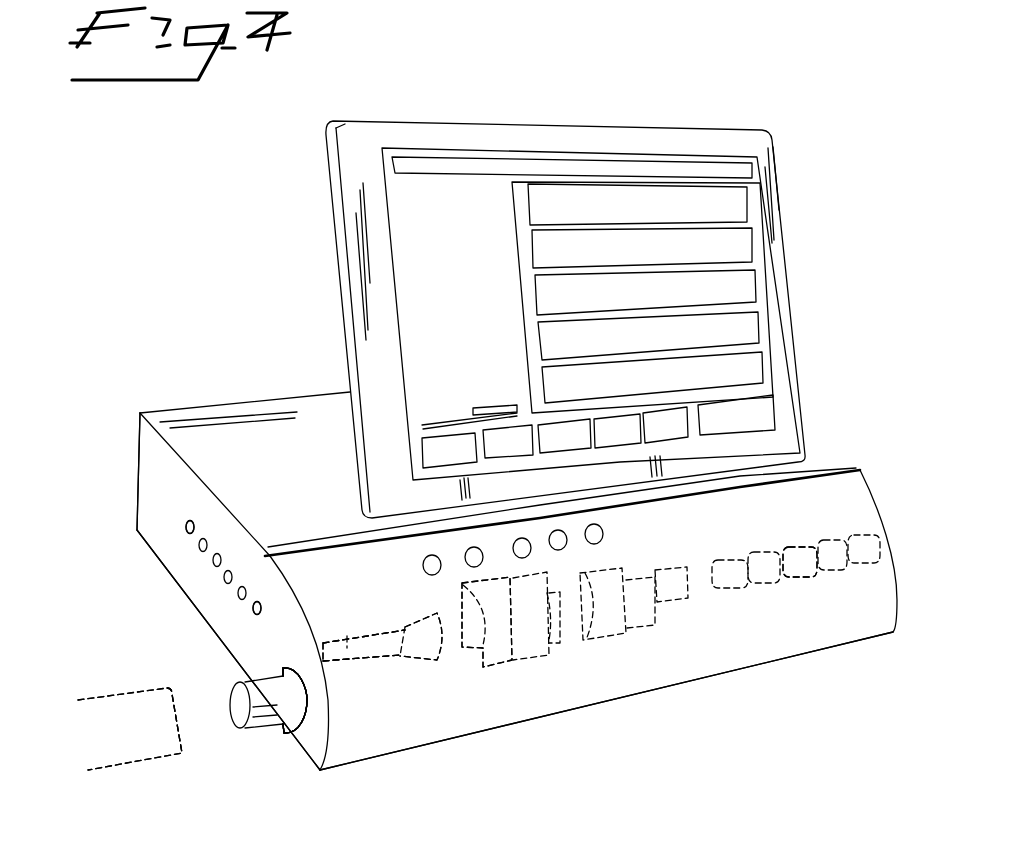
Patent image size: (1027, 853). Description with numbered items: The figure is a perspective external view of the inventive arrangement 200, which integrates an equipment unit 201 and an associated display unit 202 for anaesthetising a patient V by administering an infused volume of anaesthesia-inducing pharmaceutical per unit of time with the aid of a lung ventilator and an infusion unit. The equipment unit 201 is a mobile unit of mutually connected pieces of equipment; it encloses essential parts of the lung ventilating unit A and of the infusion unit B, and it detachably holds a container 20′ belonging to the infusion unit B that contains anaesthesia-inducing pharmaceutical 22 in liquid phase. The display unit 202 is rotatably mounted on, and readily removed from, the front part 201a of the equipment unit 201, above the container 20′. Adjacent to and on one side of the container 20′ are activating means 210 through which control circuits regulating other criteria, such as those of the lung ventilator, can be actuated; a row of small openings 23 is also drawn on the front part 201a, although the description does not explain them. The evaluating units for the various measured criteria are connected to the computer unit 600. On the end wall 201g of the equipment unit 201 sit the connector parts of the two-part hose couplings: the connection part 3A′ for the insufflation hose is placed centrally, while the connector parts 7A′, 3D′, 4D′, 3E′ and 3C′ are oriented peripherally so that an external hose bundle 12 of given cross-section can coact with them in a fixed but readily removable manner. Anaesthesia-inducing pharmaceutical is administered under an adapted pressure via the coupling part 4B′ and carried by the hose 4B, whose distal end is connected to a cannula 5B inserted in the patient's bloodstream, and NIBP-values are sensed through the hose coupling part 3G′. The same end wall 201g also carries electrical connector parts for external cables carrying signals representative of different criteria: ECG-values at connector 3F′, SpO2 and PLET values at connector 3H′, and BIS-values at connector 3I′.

The arrangement 200 is at (800, 180).
The display unit 202 is at (770, 273).
The equipment unit 201 is at (860, 460).
The end wall 201g is at (118, 444).
The front part 201a is at (772, 662).
The computer unit 600 is at (333, 442).
The indicator holes 23 is at (617, 533).
The connector 3I′ is at (205, 553).
The connector part 3F′ is at (218, 565).
The connector part 3G′ is at (228, 578).
The connector 3H′ is at (257, 608).
The cannula 5B is at (239, 586).
The infusion unit B is at (600, 688).
The hose 4B is at (343, 633).
The coupling part 4B′ is at (400, 653).
The anaesthesia inducing pharmaceutical 22 is at (441, 655).
The container 20′ is at (462, 650).
The lung ventilator A is at (737, 641).
The activating means 210 is at (825, 582).
The connection part 3A′ is at (262, 727).
The connector part 7A′ is at (288, 736).
The connector part 3D′ is at (295, 700).
The connector part 4D′ is at (295, 700).
The connector part 3C′ is at (295, 700).
The connector part 3E′ is at (295, 700).
The hose bundle 12 is at (107, 698).
The patient V is at (40, 760).